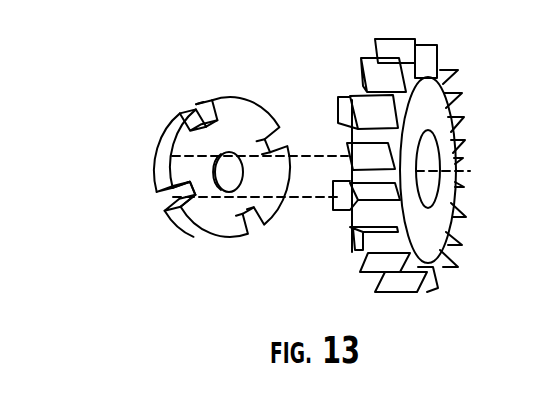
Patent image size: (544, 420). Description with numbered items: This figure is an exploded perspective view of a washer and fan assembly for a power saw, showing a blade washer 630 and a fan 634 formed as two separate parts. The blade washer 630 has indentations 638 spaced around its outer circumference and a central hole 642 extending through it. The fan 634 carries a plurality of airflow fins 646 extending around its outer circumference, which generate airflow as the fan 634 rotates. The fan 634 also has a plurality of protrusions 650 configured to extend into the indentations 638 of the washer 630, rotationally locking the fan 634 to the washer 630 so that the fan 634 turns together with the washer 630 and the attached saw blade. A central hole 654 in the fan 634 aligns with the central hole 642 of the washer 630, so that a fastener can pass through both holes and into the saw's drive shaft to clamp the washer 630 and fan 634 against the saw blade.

The blade washer 630 is at (192, 138).
The indentations 638 is at (178, 200).
The central hole 642 is at (224, 158).
The fan 634 is at (399, 192).
The airflow fins 646 is at (388, 84).
The protrusions 650 is at (336, 205).
The central hole 654 is at (423, 167).